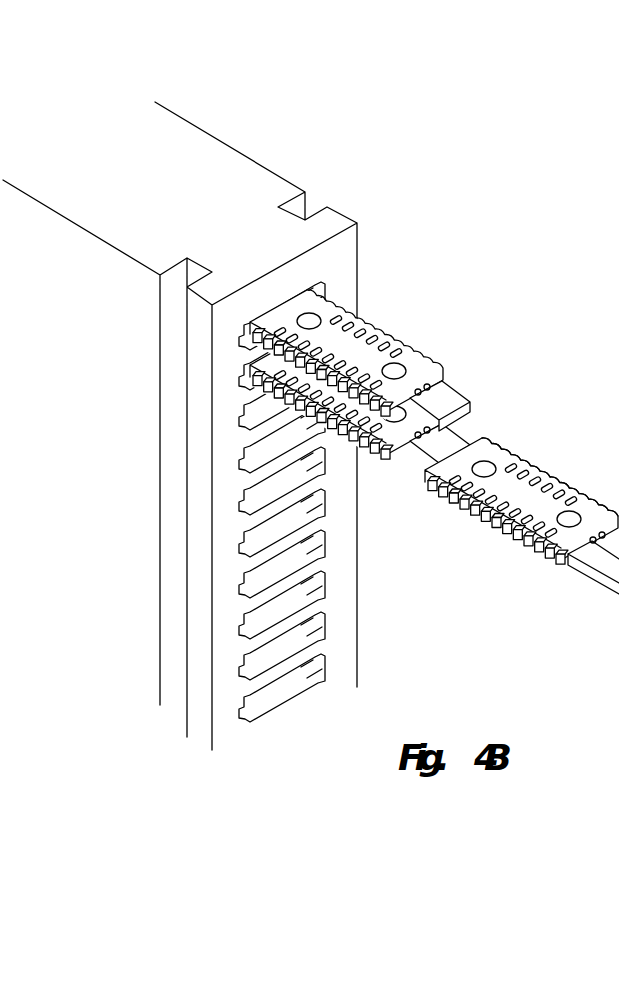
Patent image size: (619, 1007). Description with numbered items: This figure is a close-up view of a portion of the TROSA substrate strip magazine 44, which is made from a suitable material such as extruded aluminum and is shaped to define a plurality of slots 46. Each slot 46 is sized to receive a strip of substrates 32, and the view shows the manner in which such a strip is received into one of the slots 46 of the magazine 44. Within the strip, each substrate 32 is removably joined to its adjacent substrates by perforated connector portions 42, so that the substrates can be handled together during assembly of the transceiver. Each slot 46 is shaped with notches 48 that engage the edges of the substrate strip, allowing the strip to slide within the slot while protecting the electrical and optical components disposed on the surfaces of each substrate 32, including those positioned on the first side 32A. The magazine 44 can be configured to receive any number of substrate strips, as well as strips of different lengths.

The TROSA substrate strip magazine 44 is at (72, 262).
The notches 48 is at (243, 423).
The slots 46 is at (263, 420).
The perforated connector portions 42 is at (450, 442).
The substrate 32 is at (575, 563).
The first side of the substrate 32A is at (532, 463).